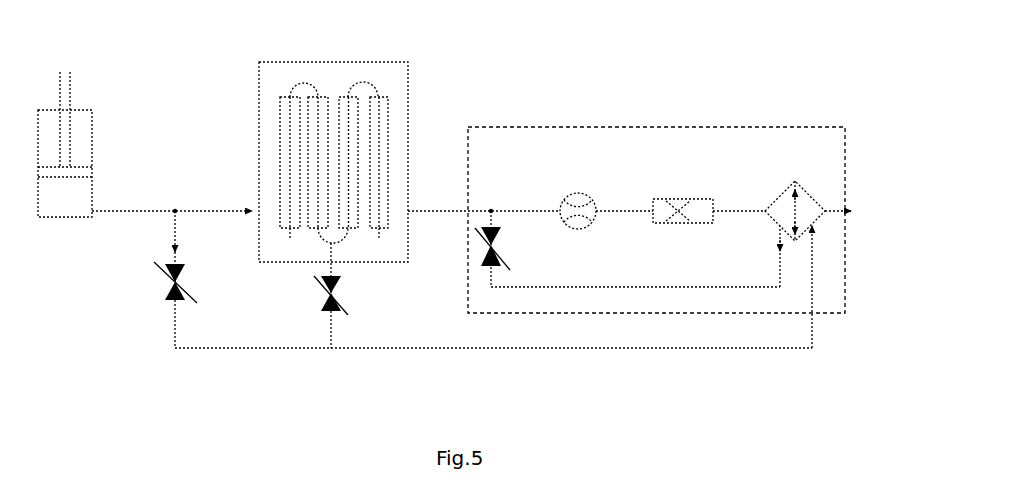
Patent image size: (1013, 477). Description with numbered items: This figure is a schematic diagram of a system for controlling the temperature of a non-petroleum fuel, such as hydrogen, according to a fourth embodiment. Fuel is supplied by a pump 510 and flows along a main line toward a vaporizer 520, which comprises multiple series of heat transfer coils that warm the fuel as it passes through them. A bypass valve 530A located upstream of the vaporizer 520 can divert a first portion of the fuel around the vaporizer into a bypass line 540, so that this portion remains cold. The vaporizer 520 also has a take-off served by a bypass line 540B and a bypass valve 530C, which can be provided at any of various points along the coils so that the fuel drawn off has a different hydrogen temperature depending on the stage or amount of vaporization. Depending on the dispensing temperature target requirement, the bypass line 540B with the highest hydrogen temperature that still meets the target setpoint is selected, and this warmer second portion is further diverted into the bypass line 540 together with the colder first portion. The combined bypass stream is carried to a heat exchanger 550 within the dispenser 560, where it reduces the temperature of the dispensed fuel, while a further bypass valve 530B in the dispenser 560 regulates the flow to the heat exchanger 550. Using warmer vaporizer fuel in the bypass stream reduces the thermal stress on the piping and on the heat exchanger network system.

The pump 510 is at (98, 130).
The vaporizer 520 is at (373, 60).
The bypass valve 530A is at (161, 289).
The bypass valve 530B is at (499, 246).
The bypass valve 530C is at (326, 293).
The bypass line 540 is at (367, 353).
The bypass line 540B is at (339, 321).
The heat exchanger 550 is at (772, 197).
The dispenser 560 is at (573, 122).